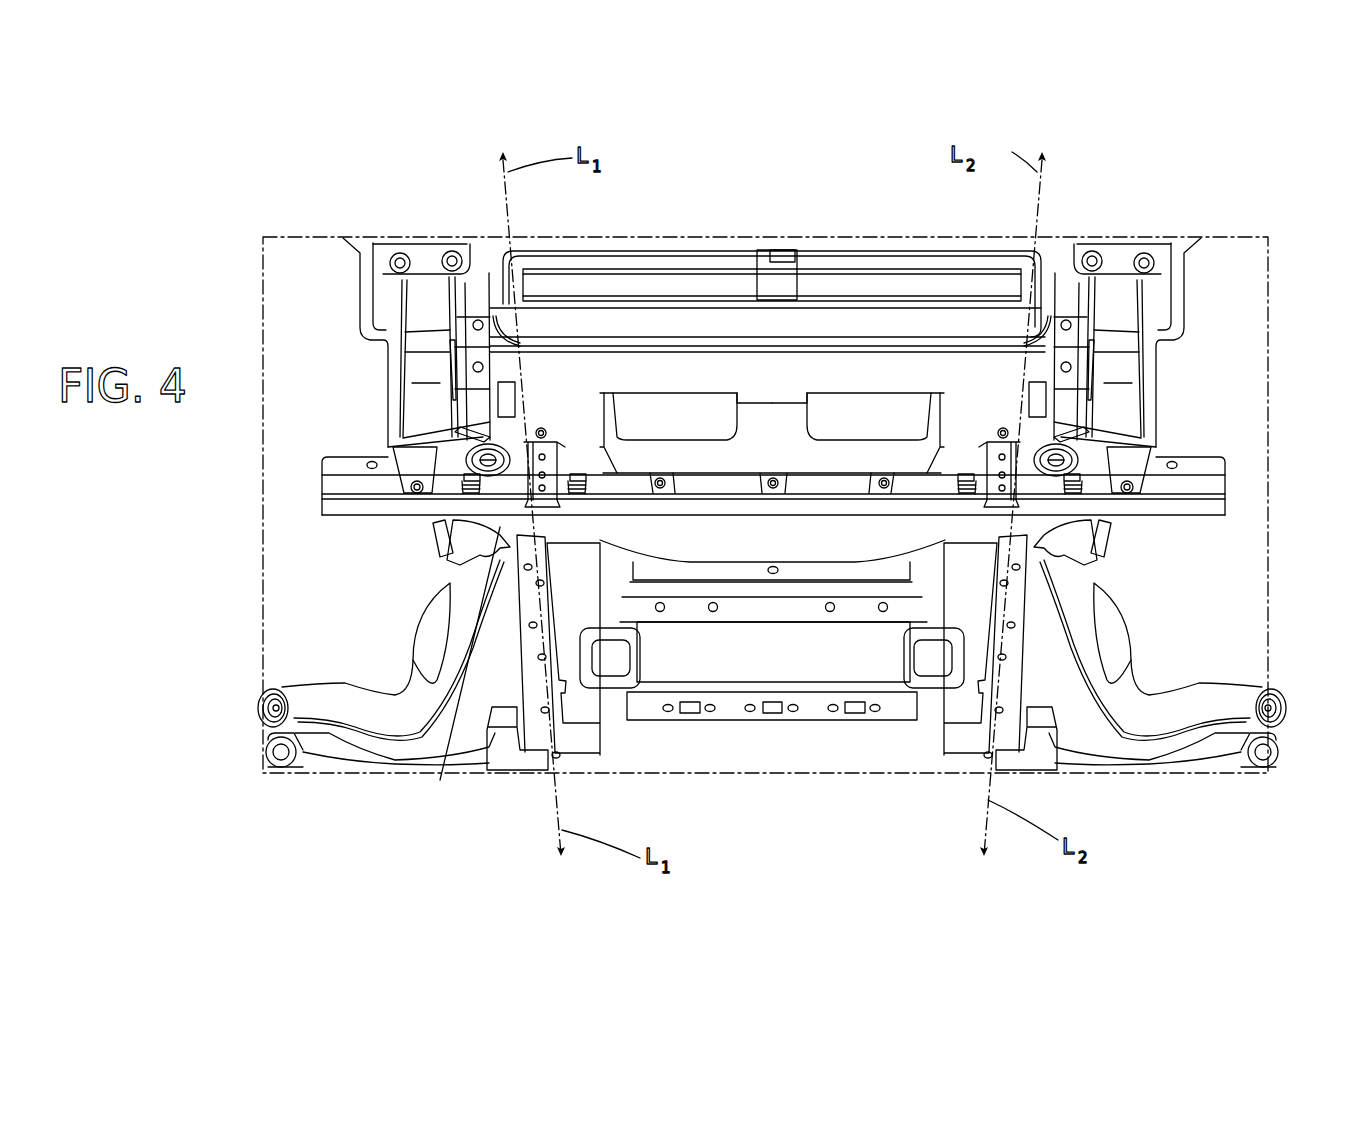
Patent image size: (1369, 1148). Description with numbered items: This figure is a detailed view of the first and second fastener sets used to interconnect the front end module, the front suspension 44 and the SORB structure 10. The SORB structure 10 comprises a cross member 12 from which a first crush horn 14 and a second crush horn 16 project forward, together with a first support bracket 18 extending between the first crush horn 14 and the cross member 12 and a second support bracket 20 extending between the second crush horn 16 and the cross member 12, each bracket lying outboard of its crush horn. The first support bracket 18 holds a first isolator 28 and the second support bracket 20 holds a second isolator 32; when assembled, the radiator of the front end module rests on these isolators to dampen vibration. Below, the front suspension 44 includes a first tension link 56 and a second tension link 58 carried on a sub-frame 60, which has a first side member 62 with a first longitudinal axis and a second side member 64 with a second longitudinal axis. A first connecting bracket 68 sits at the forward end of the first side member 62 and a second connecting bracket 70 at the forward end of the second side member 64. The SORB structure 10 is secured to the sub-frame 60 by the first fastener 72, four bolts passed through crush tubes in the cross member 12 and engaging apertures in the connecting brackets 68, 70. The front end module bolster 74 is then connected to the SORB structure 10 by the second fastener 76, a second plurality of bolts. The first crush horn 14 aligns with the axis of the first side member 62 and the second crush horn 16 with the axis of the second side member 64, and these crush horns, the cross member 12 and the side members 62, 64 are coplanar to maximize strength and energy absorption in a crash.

The SORB structure 10 is at (846, 460).
The cross member 12 is at (1175, 513).
The first crush horn 14 is at (450, 515).
The second crush horn 16 is at (1067, 553).
The first support bracket 18 is at (458, 345).
The second support bracket 20 is at (1090, 460).
The first isolator 28 is at (500, 437).
The second isolator 32 is at (1060, 440).
The front suspension 44 is at (540, 787).
The first tension link 56 is at (370, 717).
The second tension link 58 is at (1165, 740).
The sub-frame 60 is at (953, 745).
The first side member 62 is at (440, 780).
The second side member 64 is at (1023, 653).
The first connecting bracket 68 is at (527, 683).
The second connecting bracket 70 is at (1073, 577).
The first fastener 72 is at (468, 487).
The front end module bolster 74 is at (747, 490).
The second fastener 76 is at (541, 428).